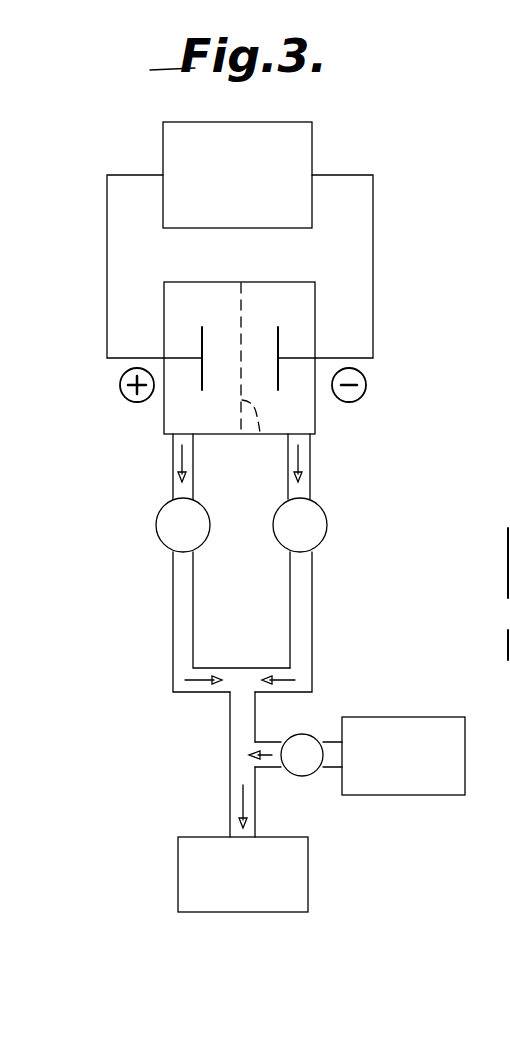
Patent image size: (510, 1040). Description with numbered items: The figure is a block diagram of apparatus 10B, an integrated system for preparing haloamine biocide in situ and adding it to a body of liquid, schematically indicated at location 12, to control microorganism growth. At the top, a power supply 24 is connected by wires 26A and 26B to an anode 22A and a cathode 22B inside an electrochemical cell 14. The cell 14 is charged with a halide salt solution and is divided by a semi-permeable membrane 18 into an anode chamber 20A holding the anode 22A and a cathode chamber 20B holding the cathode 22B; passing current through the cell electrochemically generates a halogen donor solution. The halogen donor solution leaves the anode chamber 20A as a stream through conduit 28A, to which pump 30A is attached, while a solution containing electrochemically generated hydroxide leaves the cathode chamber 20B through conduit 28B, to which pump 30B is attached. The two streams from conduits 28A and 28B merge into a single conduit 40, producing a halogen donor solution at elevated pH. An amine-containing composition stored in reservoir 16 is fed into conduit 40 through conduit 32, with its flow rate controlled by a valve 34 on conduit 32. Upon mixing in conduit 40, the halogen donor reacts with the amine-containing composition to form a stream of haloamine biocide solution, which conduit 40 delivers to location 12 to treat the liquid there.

The apparatus 10B is at (120, 116).
The location 12 is at (212, 858).
The electrochemical cell 14 is at (178, 287).
The reservoir 16 is at (413, 726).
The semi-permeable membrane 18 is at (254, 435).
The anode chamber 20A is at (177, 412).
The cathode chamber 20B is at (298, 418).
The anode 22A is at (202, 338).
The cathode 22B is at (278, 334).
The power supply 24 is at (300, 131).
The wire 26A is at (107, 287).
The wire 26B is at (370, 284).
The conduit 28A is at (180, 598).
The conduit 28B is at (302, 598).
The pump 30A is at (157, 522).
The pump 30B is at (327, 522).
The conduit 32 is at (270, 763).
The valve 34 is at (300, 741).
The conduit 40 is at (232, 773).